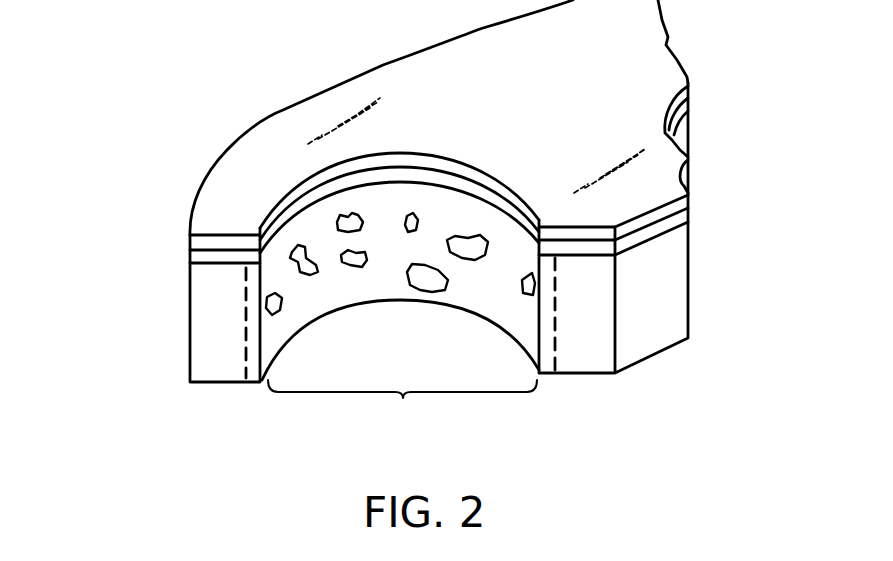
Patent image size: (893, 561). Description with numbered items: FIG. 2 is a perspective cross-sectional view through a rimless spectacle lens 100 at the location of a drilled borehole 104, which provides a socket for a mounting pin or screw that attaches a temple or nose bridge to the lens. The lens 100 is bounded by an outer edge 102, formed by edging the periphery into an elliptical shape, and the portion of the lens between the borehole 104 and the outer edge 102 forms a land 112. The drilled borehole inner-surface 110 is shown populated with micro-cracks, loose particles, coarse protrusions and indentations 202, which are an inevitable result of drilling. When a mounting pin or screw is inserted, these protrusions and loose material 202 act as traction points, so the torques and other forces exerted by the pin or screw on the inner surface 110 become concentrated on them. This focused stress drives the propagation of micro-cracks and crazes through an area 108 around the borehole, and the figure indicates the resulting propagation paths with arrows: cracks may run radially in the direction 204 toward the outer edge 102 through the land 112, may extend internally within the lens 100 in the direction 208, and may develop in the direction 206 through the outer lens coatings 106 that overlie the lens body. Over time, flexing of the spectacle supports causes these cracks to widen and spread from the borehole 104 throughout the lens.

The rimless spectacle lens 100 is at (652, 337).
The outer edge 102 is at (190, 358).
The borehole 104 is at (400, 369).
The outer lens coatings 106 is at (590, 115).
The area around the borehole 108 is at (243, 294).
The borehole inner-surface 110 is at (474, 221).
The land 112 is at (258, 163).
The micro-cracks, protrusions, indentations and loose material 202 is at (425, 283).
The radial crack propagation direction 204 is at (232, 322).
The coating crack propagation direction 206 is at (583, 295).
The internal crack propagation direction 208 is at (647, 274).